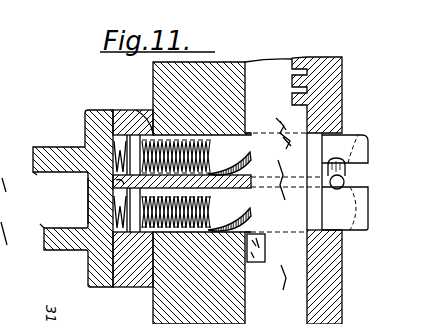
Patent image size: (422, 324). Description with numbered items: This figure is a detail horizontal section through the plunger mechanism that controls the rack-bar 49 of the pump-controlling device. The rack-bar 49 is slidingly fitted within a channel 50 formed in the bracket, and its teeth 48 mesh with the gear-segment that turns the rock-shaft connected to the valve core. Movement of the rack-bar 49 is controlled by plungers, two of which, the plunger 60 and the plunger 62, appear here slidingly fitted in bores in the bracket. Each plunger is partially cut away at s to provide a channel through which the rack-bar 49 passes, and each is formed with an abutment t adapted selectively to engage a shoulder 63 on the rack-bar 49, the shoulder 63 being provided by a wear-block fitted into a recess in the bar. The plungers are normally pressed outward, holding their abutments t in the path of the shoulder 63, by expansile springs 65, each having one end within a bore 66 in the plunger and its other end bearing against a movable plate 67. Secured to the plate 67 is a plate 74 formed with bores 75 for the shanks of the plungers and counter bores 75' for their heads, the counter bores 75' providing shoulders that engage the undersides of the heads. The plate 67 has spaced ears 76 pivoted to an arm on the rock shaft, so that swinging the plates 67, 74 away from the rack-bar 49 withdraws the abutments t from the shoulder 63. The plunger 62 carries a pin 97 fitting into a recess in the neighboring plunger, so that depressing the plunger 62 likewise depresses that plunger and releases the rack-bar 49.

The teeth 48 is at (302, 58).
The rack-bar 49 is at (256, 85).
The channel 50 is at (252, 80).
The plunger 60 is at (362, 218).
The plunger 62 is at (360, 150).
The shoulder 63 is at (258, 237).
The expansile springs 65 is at (220, 198).
The bore 66 is at (152, 108).
The movable plate 67 is at (88, 204).
The plate 74 is at (123, 282).
The bores 75 is at (89, 190).
The counter bores 75' is at (149, 183).
The spaced ears 76 is at (43, 226).
The pin 97 is at (344, 176).
The cut-away channel s is at (313, 162).
The abutment t is at (253, 217).